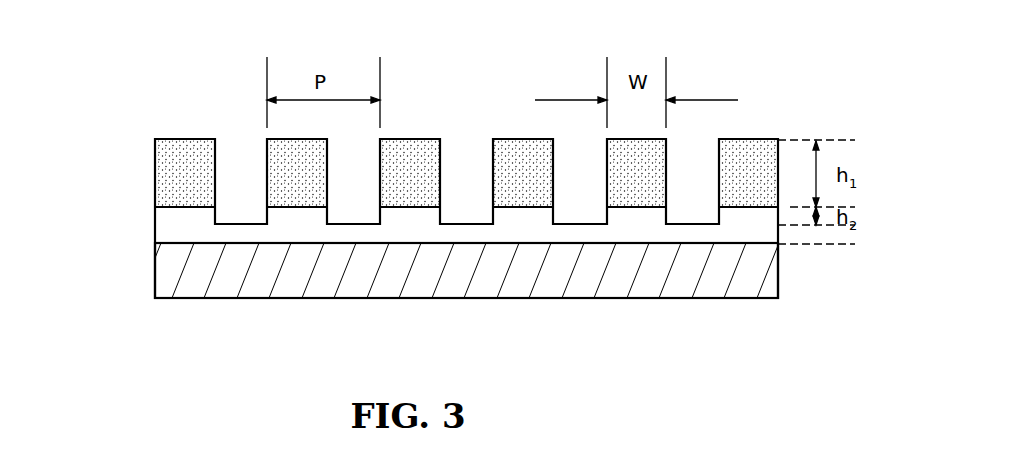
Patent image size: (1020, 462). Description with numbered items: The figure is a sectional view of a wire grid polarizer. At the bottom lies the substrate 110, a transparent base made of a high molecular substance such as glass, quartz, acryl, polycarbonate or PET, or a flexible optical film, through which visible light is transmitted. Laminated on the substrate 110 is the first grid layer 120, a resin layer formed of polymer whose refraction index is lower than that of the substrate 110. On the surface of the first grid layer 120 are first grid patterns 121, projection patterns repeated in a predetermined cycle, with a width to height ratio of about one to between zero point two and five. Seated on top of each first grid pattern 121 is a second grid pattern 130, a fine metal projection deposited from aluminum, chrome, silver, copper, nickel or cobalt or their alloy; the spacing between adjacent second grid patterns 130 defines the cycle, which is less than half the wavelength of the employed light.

The substrate 110 is at (168, 276).
The first grid layer 120 is at (168, 237).
The first grid pattern 121 is at (168, 210).
The second grid pattern 130 is at (168, 168).